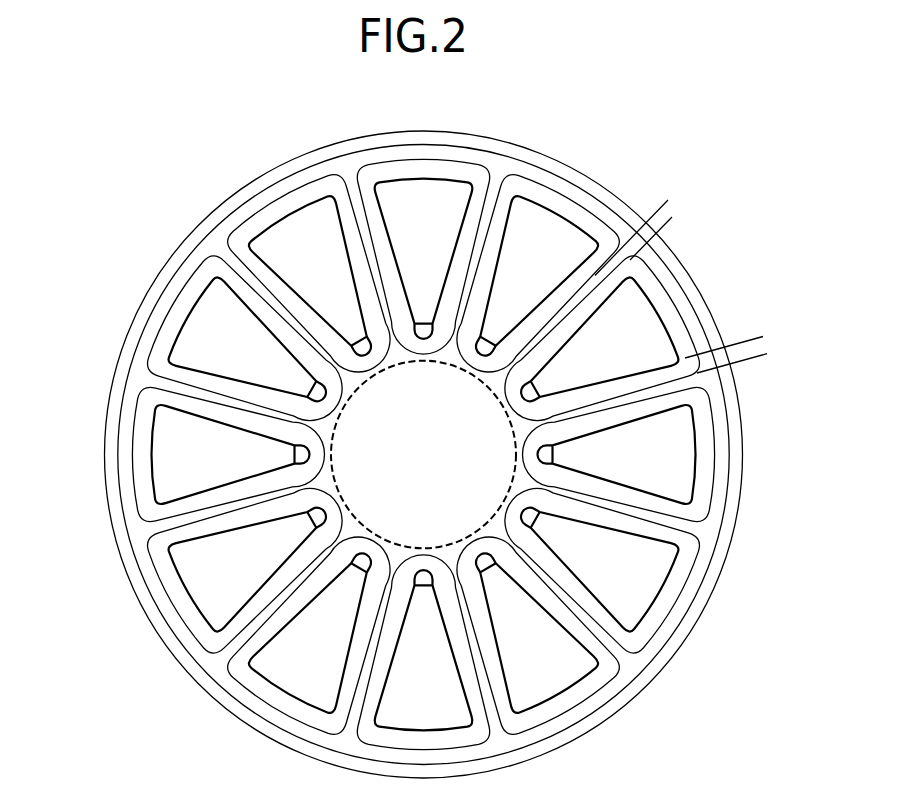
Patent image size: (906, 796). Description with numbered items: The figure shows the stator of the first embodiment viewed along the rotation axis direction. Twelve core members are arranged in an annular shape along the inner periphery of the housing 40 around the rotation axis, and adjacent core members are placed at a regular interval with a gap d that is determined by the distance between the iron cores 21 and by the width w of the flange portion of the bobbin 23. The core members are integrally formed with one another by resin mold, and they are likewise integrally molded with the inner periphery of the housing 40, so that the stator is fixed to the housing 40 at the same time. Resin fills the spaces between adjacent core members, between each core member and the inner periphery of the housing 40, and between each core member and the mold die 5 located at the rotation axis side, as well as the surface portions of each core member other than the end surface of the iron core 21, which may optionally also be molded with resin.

The iron core 21 is at (202, 340).
The bobbin 23 is at (167, 357).
The housing 40 is at (108, 441).
The mold die 5 is at (517, 434).
The gap d is at (643, 187).
The width w is at (742, 313).